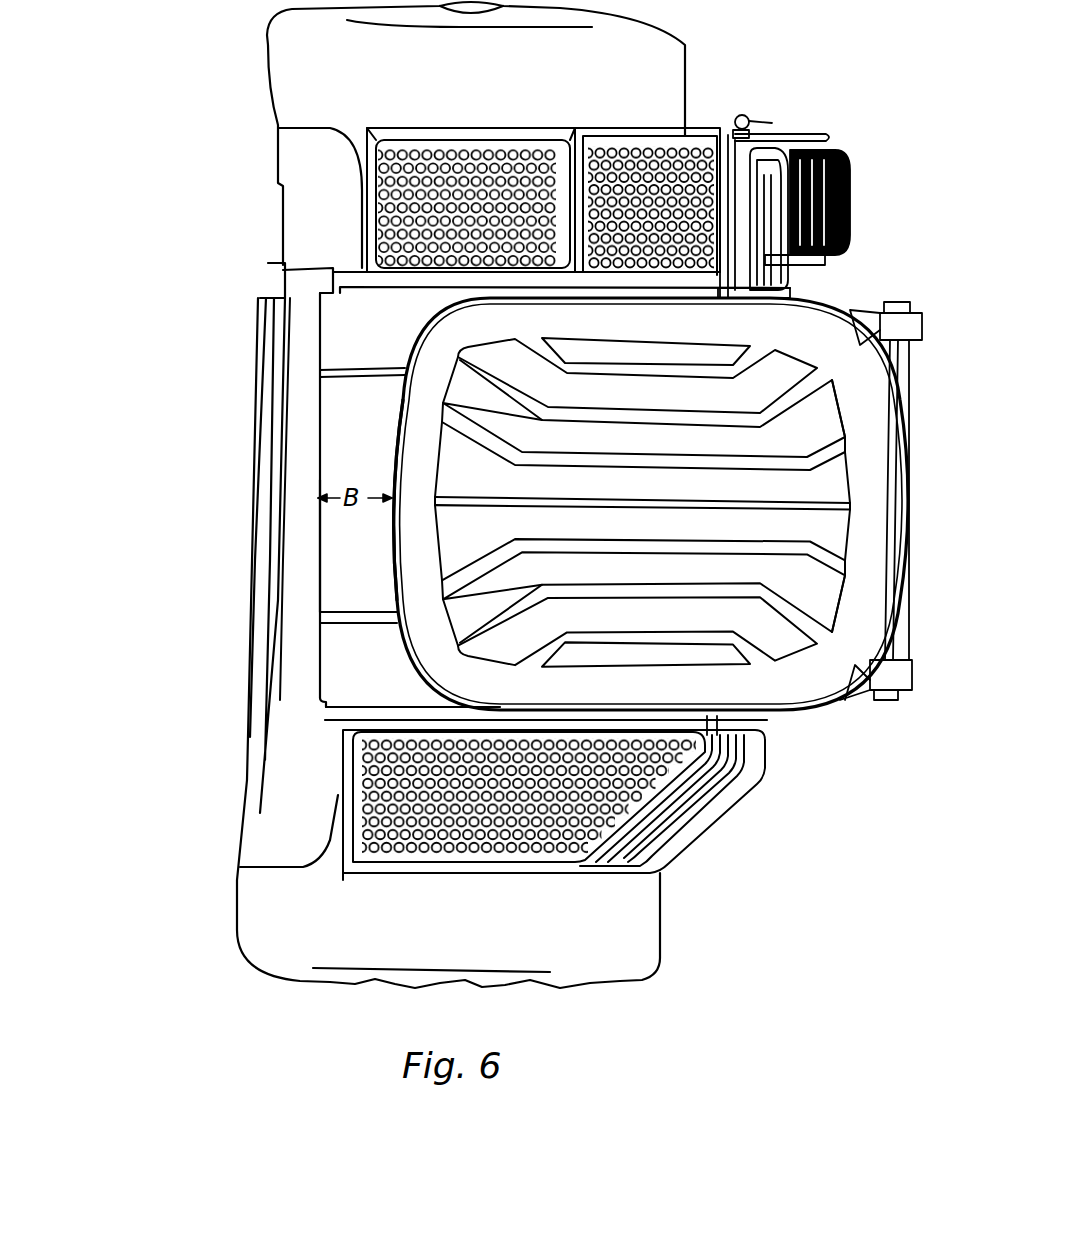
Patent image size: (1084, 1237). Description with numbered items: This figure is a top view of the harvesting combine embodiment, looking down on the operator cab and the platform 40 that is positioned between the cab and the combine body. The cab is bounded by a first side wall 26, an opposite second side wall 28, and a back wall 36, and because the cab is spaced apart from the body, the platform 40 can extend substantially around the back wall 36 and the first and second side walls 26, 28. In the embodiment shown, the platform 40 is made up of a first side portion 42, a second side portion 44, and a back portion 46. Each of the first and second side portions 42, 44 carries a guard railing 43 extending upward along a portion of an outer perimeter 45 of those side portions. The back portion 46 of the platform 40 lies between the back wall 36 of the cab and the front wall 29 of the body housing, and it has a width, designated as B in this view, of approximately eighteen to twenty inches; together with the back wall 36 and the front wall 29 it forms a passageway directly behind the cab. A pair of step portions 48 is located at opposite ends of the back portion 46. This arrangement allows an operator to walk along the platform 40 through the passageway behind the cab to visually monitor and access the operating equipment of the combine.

The first side wall 26 is at (793, 300).
The second side wall 28 is at (733, 738).
The front wall 29 is at (318, 466).
The back wall 36 is at (385, 568).
The platform 40 is at (307, 457).
The first side portion 42 is at (363, 787).
The guard railing 43 is at (728, 806).
The second side portion 44 is at (565, 180).
The outer perimeter 45 is at (347, 873).
The back portion 46 is at (335, 548).
The step portions 48 is at (335, 330).